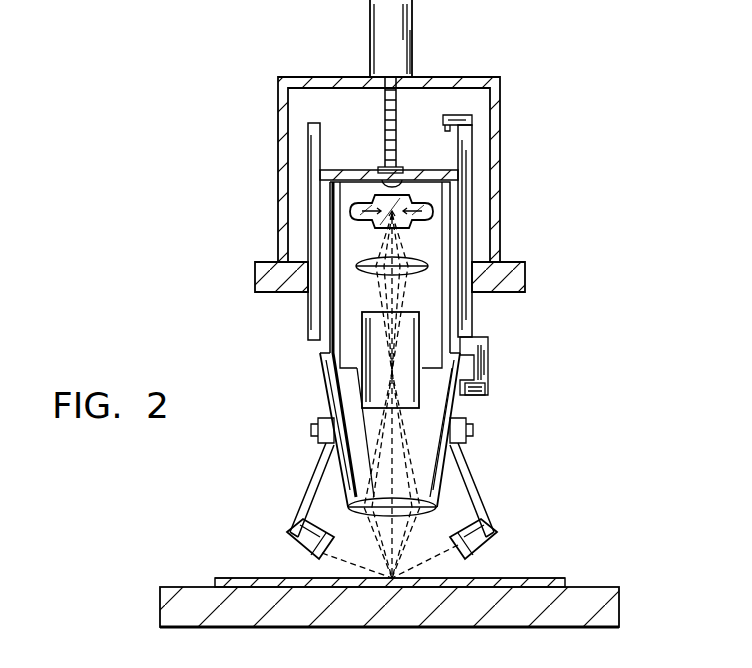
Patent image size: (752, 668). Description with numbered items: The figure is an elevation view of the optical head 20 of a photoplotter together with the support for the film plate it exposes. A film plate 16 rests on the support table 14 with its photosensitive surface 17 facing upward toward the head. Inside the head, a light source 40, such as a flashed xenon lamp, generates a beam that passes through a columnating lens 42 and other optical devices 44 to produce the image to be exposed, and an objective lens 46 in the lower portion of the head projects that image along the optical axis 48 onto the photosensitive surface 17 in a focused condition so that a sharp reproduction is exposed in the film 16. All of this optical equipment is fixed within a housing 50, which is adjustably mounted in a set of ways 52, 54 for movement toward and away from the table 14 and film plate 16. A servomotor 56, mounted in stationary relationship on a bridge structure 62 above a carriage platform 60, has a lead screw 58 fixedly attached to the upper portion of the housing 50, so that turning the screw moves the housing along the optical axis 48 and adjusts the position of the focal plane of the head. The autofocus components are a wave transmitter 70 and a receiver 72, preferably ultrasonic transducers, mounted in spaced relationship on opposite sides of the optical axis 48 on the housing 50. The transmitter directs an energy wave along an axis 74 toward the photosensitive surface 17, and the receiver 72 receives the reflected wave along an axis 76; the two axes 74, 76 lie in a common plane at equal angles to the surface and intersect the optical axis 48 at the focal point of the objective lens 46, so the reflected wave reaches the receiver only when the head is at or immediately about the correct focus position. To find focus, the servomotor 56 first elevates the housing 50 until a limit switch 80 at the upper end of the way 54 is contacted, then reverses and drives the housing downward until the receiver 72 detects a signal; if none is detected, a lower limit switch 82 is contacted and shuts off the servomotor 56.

The support table 14 is at (172, 586).
The film plate 16 is at (566, 581).
The photosensitive surface 17 is at (545, 578).
The optical head 20 is at (266, 188).
The light source 40 is at (373, 222).
The columnating lens 42 is at (366, 270).
The optical devices 44 is at (424, 330).
The objective lens 46 is at (362, 492).
The optical axis 48 is at (396, 463).
The housing 50 is at (326, 383).
The way 52 is at (318, 138).
The way 54 is at (474, 314).
The servomotor 56 is at (408, 33).
The lead screw 58 is at (398, 123).
The carriage platform 60 is at (525, 275).
The bridge structure 62 is at (500, 150).
The wave transmitter 70 is at (298, 556).
The receiver 72 is at (488, 548).
The transmitter axis 74 is at (346, 553).
The receiver axis 76 is at (443, 552).
The limit switch 80 is at (446, 114).
The lower limit switch 82 is at (475, 396).